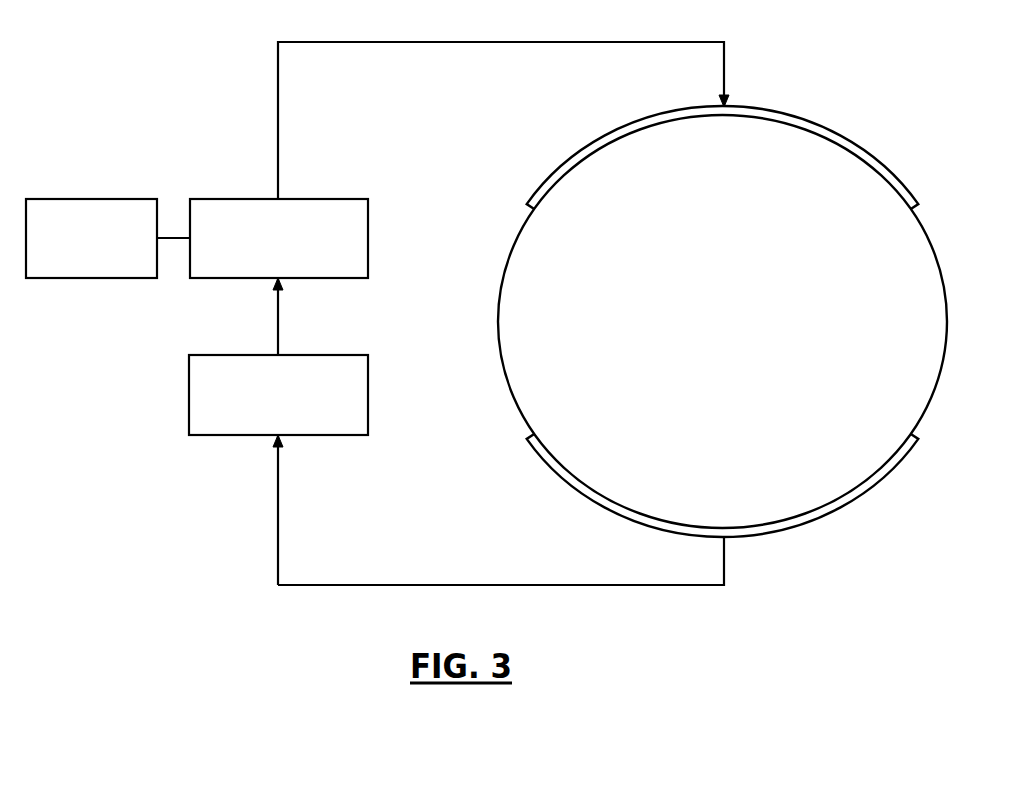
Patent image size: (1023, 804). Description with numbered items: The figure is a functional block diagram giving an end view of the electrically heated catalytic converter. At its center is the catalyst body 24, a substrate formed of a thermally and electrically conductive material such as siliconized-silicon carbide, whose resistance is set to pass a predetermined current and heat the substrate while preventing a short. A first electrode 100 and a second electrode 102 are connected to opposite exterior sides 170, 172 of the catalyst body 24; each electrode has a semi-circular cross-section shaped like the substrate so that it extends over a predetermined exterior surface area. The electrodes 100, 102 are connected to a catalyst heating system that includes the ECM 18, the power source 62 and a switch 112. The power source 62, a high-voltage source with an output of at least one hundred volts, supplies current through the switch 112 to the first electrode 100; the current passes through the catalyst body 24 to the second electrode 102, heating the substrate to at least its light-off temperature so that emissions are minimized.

The ECM 18 is at (90, 199).
The switch 112 is at (234, 199).
The power source 62 is at (216, 355).
The catalyst body 24 is at (943, 268).
The first electrode 100 is at (593, 145).
The second electrode 102 is at (867, 496).
The exterior side 170 is at (765, 117).
The exterior side 172 is at (744, 530).